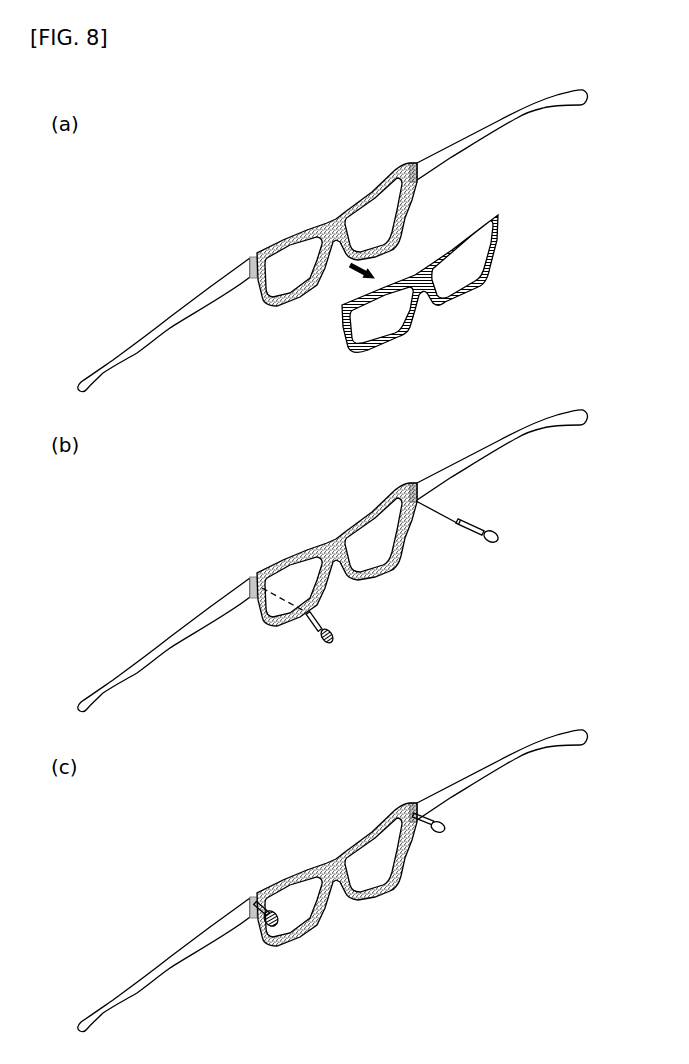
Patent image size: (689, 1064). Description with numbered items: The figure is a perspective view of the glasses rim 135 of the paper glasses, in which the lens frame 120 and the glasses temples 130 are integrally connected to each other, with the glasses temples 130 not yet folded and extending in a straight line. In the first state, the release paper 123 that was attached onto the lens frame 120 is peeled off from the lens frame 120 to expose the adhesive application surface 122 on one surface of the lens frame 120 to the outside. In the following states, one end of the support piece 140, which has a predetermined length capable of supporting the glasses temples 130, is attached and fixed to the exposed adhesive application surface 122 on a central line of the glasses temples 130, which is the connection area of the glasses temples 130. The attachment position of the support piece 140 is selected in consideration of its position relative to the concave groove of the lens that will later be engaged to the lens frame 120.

The lens frame 120 is at (287, 236).
The adhesive application surface 122 is at (379, 187).
The release paper 123 is at (487, 224).
The glasses temples 130 is at (225, 271).
The glasses rim 135 is at (264, 173).
The support piece 140 is at (483, 528).